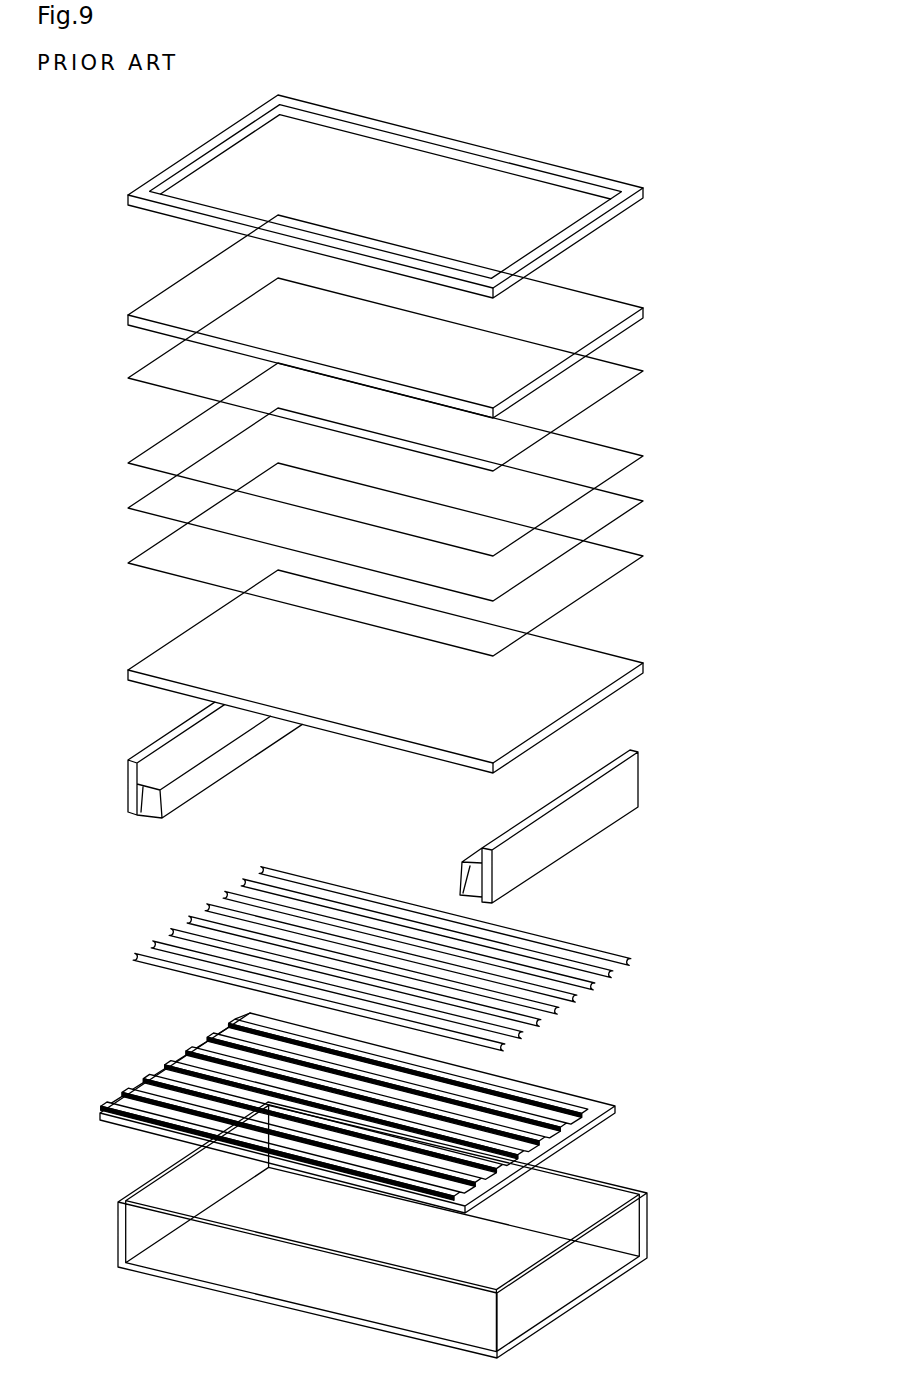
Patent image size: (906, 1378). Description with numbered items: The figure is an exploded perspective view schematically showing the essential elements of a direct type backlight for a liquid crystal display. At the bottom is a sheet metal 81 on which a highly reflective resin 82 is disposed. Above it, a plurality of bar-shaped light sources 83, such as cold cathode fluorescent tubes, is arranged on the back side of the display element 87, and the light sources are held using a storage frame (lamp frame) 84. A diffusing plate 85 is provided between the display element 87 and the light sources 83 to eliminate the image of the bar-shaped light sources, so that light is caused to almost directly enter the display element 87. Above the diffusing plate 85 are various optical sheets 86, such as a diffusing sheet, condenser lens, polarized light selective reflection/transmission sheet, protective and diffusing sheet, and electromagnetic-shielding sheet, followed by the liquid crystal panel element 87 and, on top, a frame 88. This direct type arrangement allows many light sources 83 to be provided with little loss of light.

The sheet metal 81 is at (647, 1213).
The highly reflective resin 82 is at (616, 1108).
The bar-shaped light sources 83 is at (633, 965).
The storage frame (lamp frame) 84 is at (612, 797).
The diffusing plate 85 is at (590, 670).
The optical sheets 86 is at (648, 363).
The display element 87 is at (590, 307).
The frame 88 is at (643, 198).